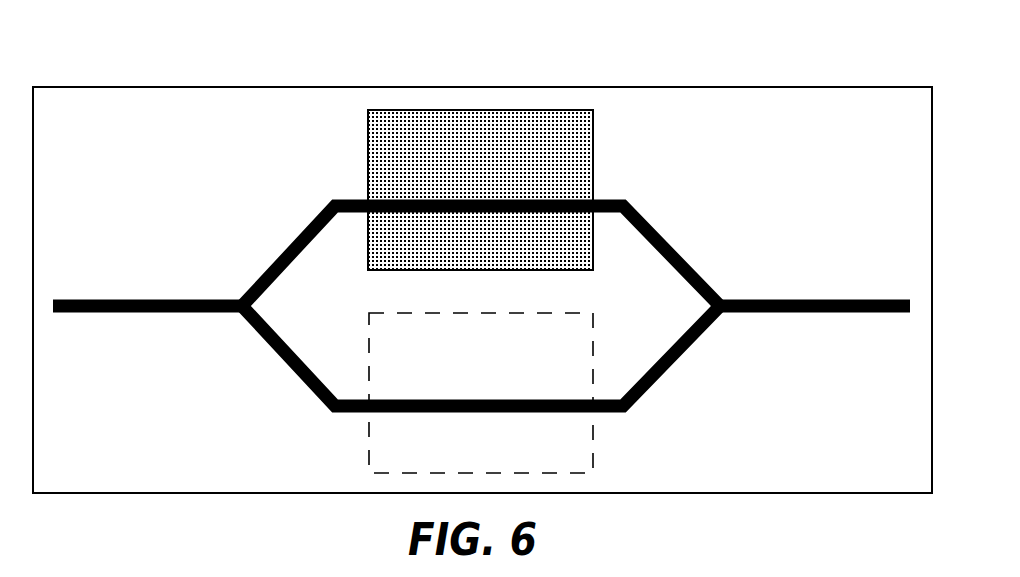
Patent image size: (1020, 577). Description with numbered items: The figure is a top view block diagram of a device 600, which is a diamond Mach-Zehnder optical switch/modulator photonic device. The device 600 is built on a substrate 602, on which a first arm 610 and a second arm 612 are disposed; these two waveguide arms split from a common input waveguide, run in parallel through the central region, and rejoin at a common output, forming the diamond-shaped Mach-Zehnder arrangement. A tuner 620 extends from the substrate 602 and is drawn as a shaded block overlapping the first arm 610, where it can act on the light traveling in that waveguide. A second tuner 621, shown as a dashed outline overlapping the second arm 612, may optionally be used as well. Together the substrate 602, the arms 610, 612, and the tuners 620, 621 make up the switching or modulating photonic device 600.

The device 600 is at (212, 54).
The substrate 602 is at (808, 86).
The first arm 610 is at (355, 201).
The second arm 612 is at (347, 411).
The tuner 620 is at (393, 143).
The second tuner 621 is at (393, 441).